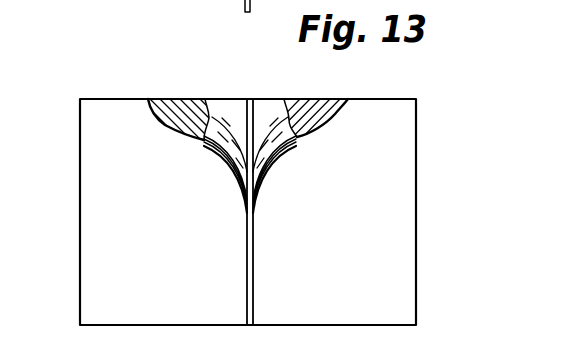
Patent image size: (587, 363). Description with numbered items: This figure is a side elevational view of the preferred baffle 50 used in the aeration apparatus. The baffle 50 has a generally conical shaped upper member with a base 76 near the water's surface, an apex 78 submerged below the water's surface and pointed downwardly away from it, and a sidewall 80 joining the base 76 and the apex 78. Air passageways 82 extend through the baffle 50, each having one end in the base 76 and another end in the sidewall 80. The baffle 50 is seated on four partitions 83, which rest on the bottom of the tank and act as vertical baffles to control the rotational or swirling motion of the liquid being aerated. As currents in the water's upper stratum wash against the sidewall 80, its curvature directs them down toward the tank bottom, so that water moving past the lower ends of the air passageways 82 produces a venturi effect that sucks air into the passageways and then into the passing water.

The baffle 50 is at (418, 148).
The base 76 is at (228, 110).
The apex 78 is at (258, 180).
The sidewall 80 is at (293, 143).
The air passageways 82 is at (178, 128).
The partitions 83 is at (101, 185).